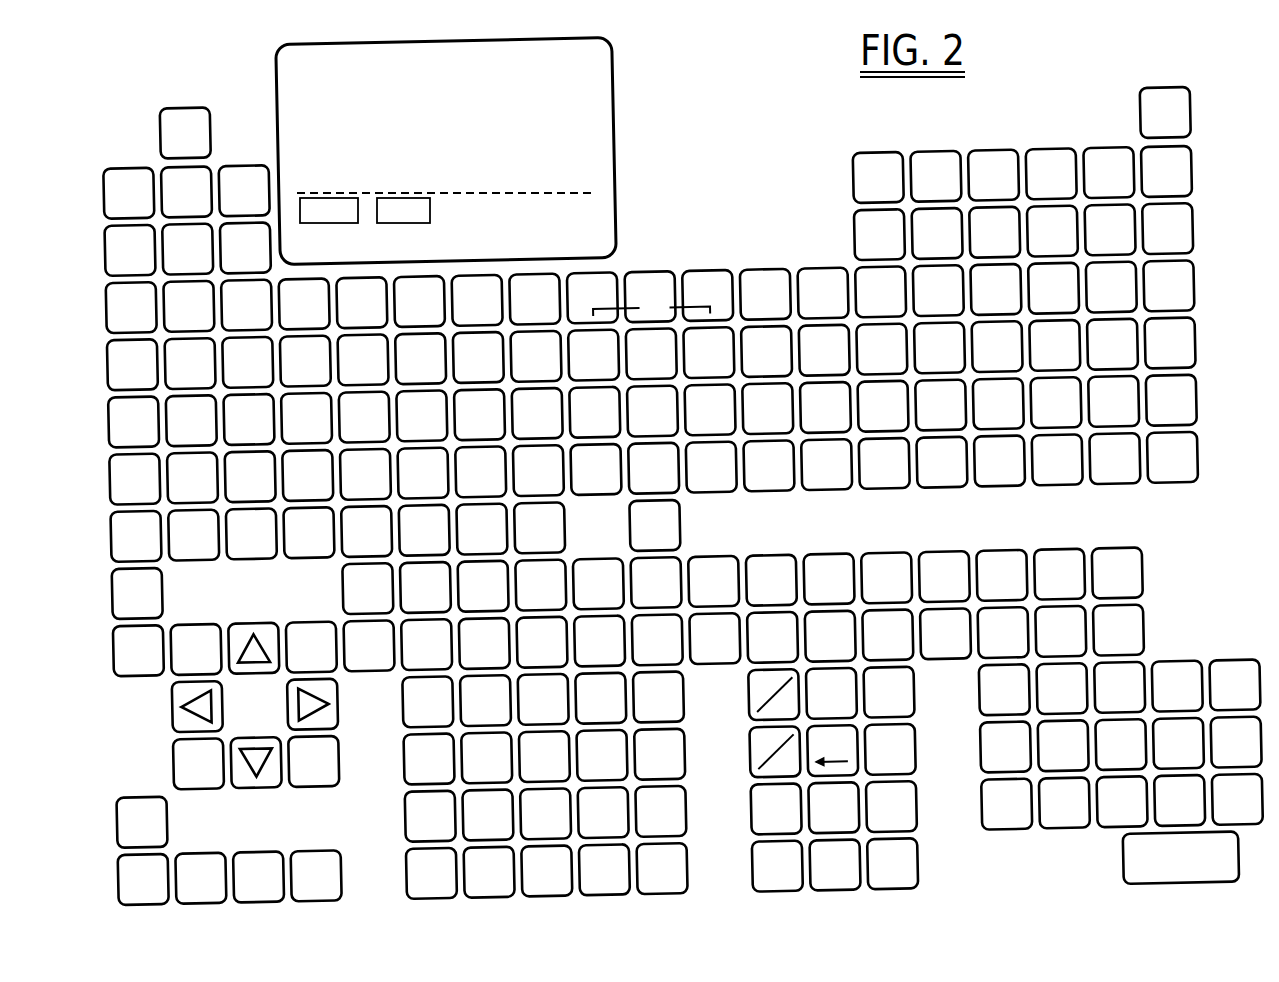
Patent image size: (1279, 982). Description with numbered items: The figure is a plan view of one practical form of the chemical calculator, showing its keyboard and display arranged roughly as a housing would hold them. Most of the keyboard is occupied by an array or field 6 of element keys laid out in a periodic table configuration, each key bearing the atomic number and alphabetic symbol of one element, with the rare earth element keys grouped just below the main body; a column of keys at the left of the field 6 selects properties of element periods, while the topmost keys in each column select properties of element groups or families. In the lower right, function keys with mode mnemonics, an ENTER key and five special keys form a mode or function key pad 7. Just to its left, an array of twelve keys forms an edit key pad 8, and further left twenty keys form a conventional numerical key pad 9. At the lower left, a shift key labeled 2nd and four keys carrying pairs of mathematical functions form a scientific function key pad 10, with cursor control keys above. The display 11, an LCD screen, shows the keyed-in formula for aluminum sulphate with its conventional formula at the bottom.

The array or field of element keys 6 is at (972, 541).
The mode or function key pad 7 is at (1070, 845).
The edit key pad 8 is at (743, 832).
The numerical key pad 9 is at (392, 836).
The scientific function key pad 10 is at (266, 840).
The display 11 is at (597, 253).